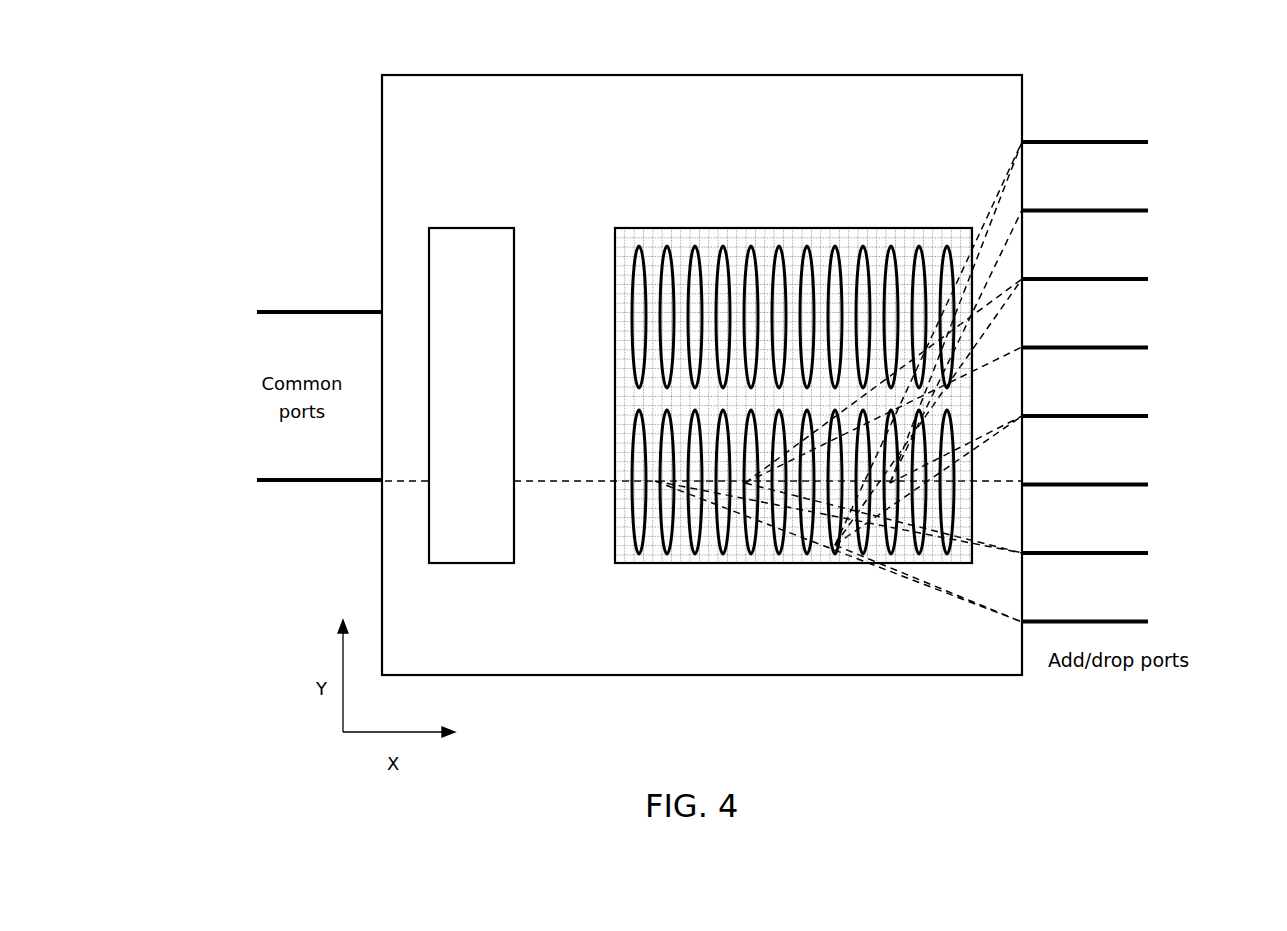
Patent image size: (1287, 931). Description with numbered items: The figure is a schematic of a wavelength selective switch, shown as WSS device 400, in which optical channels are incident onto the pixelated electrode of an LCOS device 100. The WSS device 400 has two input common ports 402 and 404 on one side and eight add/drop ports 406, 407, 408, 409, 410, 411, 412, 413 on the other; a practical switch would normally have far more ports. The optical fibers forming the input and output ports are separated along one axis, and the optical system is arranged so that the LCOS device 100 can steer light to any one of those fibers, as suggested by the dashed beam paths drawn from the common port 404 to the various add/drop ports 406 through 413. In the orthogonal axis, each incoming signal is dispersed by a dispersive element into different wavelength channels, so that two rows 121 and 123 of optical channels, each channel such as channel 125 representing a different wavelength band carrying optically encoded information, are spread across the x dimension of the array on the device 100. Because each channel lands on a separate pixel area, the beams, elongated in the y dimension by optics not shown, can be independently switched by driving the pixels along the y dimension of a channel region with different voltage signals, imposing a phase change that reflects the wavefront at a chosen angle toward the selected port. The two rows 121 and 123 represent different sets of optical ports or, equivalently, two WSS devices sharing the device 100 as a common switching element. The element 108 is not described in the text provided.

The WSS device 400 is at (565, 58).
The input common port 402 is at (268, 312).
The input common port 404 is at (268, 480).
The add/drop port 406 is at (1120, 142).
The add/drop port 407 is at (1120, 210).
The add/drop port 408 is at (1120, 279).
The add/drop port 409 is at (1120, 347).
The add/drop port 410 is at (1120, 416).
The add/drop port 411 is at (1120, 484).
The add/drop port 412 is at (1120, 553).
The add/drop port 413 is at (1120, 621).
The LCOS device 100 is at (755, 364).
The substrate 108 is at (730, 237).
The row of optical channels 121 is at (746, 280).
The row of optical channels 123 is at (632, 482).
The optical channel 125 is at (892, 256).